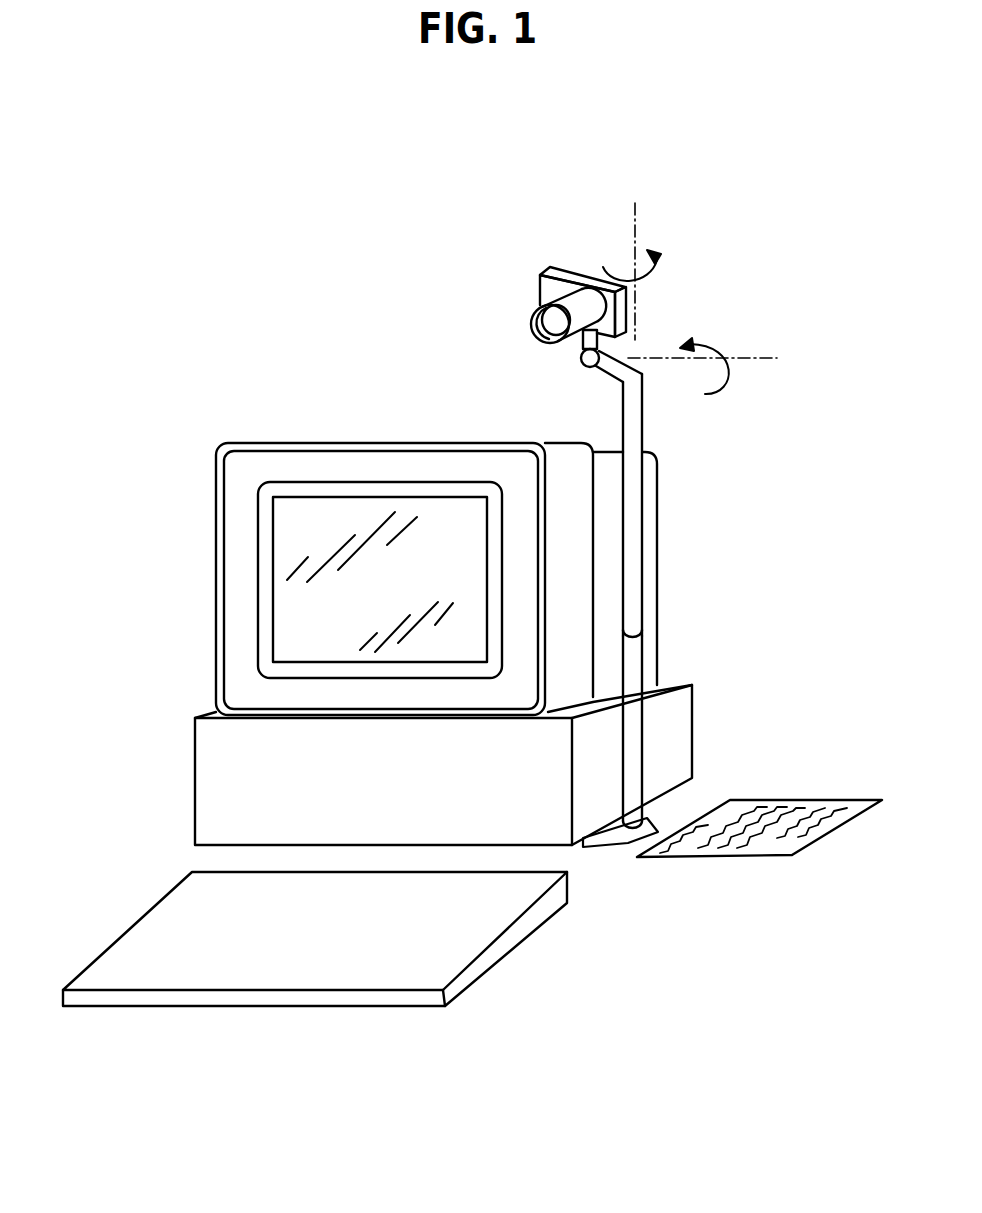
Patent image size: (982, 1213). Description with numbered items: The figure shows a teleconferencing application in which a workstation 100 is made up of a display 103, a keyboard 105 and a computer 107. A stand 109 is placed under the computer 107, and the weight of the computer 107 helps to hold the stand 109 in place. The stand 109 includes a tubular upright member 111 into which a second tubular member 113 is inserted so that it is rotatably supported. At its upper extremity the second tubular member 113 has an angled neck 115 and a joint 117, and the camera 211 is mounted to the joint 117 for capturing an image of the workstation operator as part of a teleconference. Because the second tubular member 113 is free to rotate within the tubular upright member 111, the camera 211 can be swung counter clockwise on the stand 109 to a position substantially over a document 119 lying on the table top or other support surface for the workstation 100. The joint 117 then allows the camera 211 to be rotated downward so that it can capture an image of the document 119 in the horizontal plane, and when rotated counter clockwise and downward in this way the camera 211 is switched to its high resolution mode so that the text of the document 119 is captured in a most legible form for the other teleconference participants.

The workstation 100 is at (250, 346).
The display 103 is at (215, 503).
The keyboard 105 is at (161, 901).
The computer 107 is at (193, 743).
The stand 109 is at (603, 838).
The tubular upright member 111 is at (633, 663).
The second tubular member 113 is at (633, 555).
The angled neck 115 is at (615, 357).
The joint 117 is at (580, 355).
The document 119 is at (818, 800).
The camera 211 is at (542, 280).